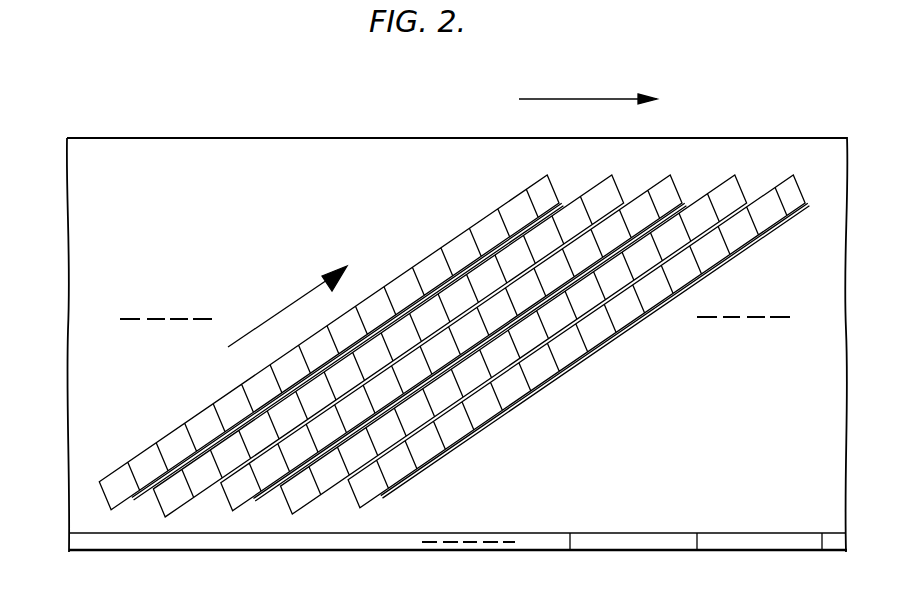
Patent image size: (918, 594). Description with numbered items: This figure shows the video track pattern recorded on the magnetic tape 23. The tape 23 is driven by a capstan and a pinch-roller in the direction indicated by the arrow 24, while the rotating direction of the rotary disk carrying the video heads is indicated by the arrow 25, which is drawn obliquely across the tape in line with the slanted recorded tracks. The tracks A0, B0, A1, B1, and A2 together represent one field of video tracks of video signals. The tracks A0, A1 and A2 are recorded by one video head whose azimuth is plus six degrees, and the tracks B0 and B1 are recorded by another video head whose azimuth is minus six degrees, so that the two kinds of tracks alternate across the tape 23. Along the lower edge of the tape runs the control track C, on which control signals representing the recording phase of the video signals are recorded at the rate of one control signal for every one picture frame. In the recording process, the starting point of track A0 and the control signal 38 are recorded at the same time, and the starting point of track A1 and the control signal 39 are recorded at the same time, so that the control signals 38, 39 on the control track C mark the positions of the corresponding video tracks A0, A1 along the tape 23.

The magnetic tape 23 is at (236, 154).
The arrow 24 is at (569, 100).
The arrow 25 is at (290, 306).
The track A0 is at (357, 508).
The track A1 is at (230, 509).
The track A2 is at (109, 510).
The track B0 is at (293, 511).
The track B1 is at (166, 514).
The control track C is at (561, 539).
The control signal 38 is at (820, 541).
The control signal 39 is at (698, 537).